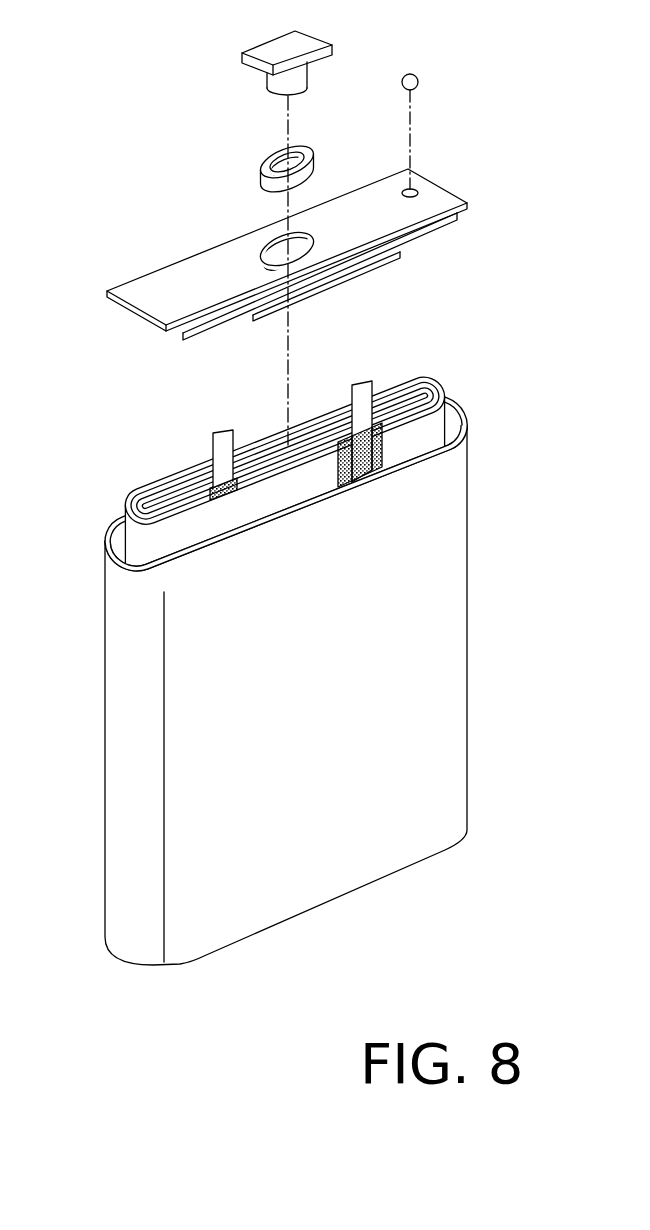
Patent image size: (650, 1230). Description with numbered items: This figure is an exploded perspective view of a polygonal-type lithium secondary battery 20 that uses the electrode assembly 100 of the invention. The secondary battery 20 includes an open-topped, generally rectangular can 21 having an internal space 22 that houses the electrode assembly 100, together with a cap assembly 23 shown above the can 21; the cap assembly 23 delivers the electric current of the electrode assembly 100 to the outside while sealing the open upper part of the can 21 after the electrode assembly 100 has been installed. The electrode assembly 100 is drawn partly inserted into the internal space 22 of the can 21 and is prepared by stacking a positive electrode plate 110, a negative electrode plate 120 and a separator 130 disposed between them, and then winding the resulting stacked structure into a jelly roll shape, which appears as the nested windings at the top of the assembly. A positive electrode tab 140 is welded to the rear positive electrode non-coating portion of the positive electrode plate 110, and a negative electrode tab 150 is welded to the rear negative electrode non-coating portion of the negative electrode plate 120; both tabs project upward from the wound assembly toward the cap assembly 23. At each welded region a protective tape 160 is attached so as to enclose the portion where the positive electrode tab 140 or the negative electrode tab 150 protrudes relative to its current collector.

The secondary battery 20 is at (65, 40).
The can 21 is at (458, 626).
The internal space 22 is at (458, 417).
The cap assembly 23 is at (466, 168).
The electrode assembly 100 is at (118, 482).
The positive electrode plate 110 is at (446, 390).
The negative electrode plate 120 is at (416, 388).
The separator 130 is at (431, 384).
The positive electrode tab 140 is at (361, 393).
The negative electrode tab 150 is at (222, 440).
The protective tape 160 is at (382, 462).